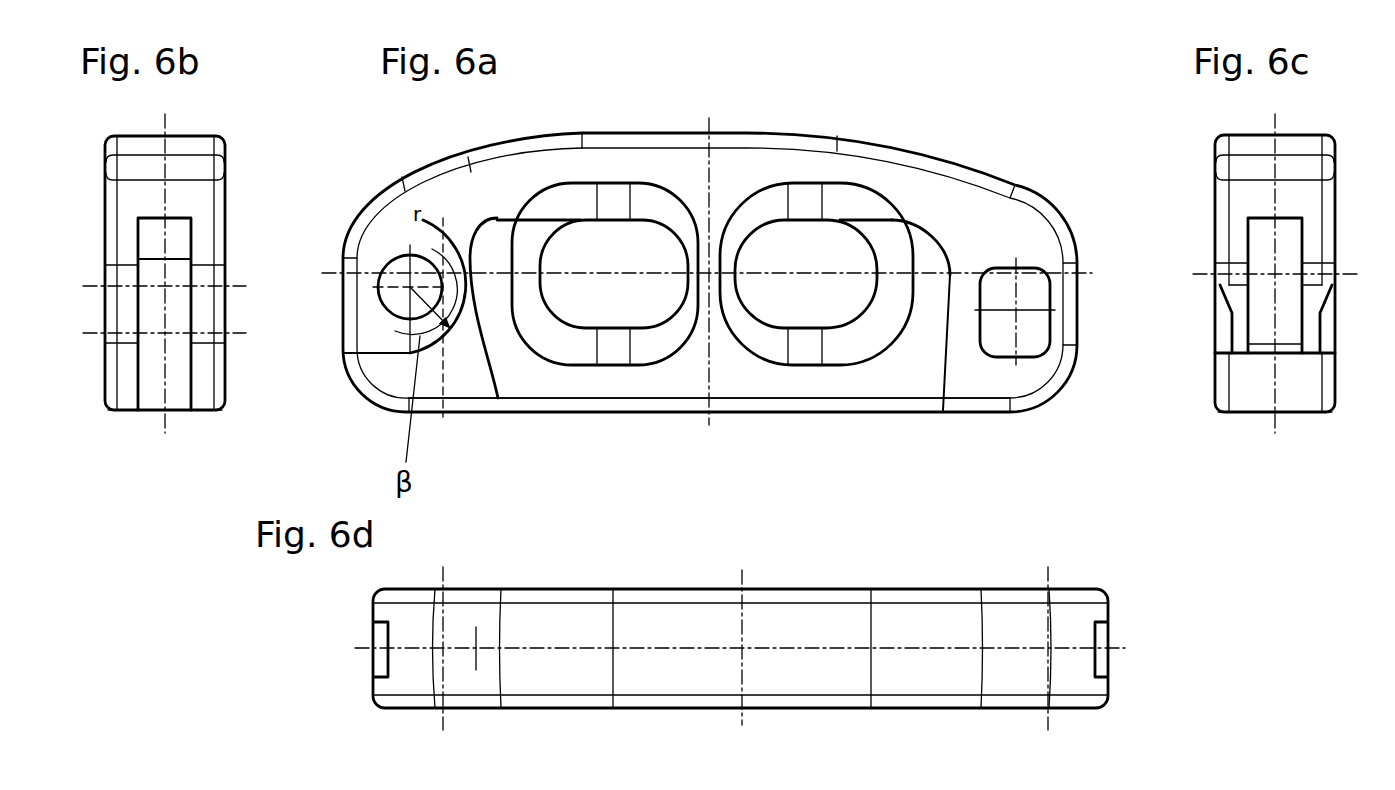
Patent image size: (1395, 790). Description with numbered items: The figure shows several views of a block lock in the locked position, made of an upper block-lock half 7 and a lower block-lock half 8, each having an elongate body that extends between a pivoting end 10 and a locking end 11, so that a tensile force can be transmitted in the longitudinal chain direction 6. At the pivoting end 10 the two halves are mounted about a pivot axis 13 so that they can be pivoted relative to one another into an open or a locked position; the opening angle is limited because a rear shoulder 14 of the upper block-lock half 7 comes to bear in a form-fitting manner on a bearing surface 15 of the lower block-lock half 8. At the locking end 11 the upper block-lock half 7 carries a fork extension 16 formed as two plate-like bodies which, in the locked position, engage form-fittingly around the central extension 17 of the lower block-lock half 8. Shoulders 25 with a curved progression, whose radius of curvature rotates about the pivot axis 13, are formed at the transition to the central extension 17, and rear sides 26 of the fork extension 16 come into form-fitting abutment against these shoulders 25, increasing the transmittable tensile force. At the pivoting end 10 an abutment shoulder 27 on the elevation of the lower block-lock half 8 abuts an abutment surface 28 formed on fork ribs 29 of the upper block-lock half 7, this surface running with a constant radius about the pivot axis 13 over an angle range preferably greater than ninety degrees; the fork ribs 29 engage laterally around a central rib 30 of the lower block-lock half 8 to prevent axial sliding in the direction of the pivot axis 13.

In FIG. 6A, the longitudinal chain direction 6 is at (1085, 277).
In FIG. 6B, the upper block-lock half 7 is at (195, 131).
In FIG. 6A, the upper block-lock half 7 is at (619, 131).
In FIG. 6C, the upper block-lock half 7 is at (1307, 130).
In FIG. 6B, the lower block-lock half 8 is at (178, 414).
In FIG. 6A, the lower block-lock half 8 is at (580, 415).
In FIG. 6C, the lower block-lock half 8 is at (1231, 416).
In FIG. 6A, the pivoting end 10 is at (325, 334).
In FIG. 6A, the locking end 11 is at (1120, 266).
In FIG. 6A, the pivot axis 13 is at (410, 287).
In FIG. 6C, the pivot axis 13 is at (1347, 274).
In FIG. 6C, the rear shoulder 14 is at (1231, 314).
In FIG. 6C, the bearing surface 15 is at (1230, 349).
In FIG. 6B, the fork extension 16 is at (112, 397).
In FIG. 6A, the fork extension 16 is at (1025, 235).
In FIG. 6B, the central extension 17 is at (150, 400).
In FIG. 6A, the shoulders 25 is at (963, 361).
In FIG. 6A, the rear sides 26 is at (951, 303).
In FIG. 6A, the abutment shoulder 27 is at (493, 252).
In FIG. 6A, the abutment surface 28 is at (491, 290).
In FIG. 6C, the fork ribs 29 is at (1236, 243).
In FIG. 6A, the central rib 30 is at (357, 343).
In FIG. 6C, the central rib 30 is at (1282, 308).